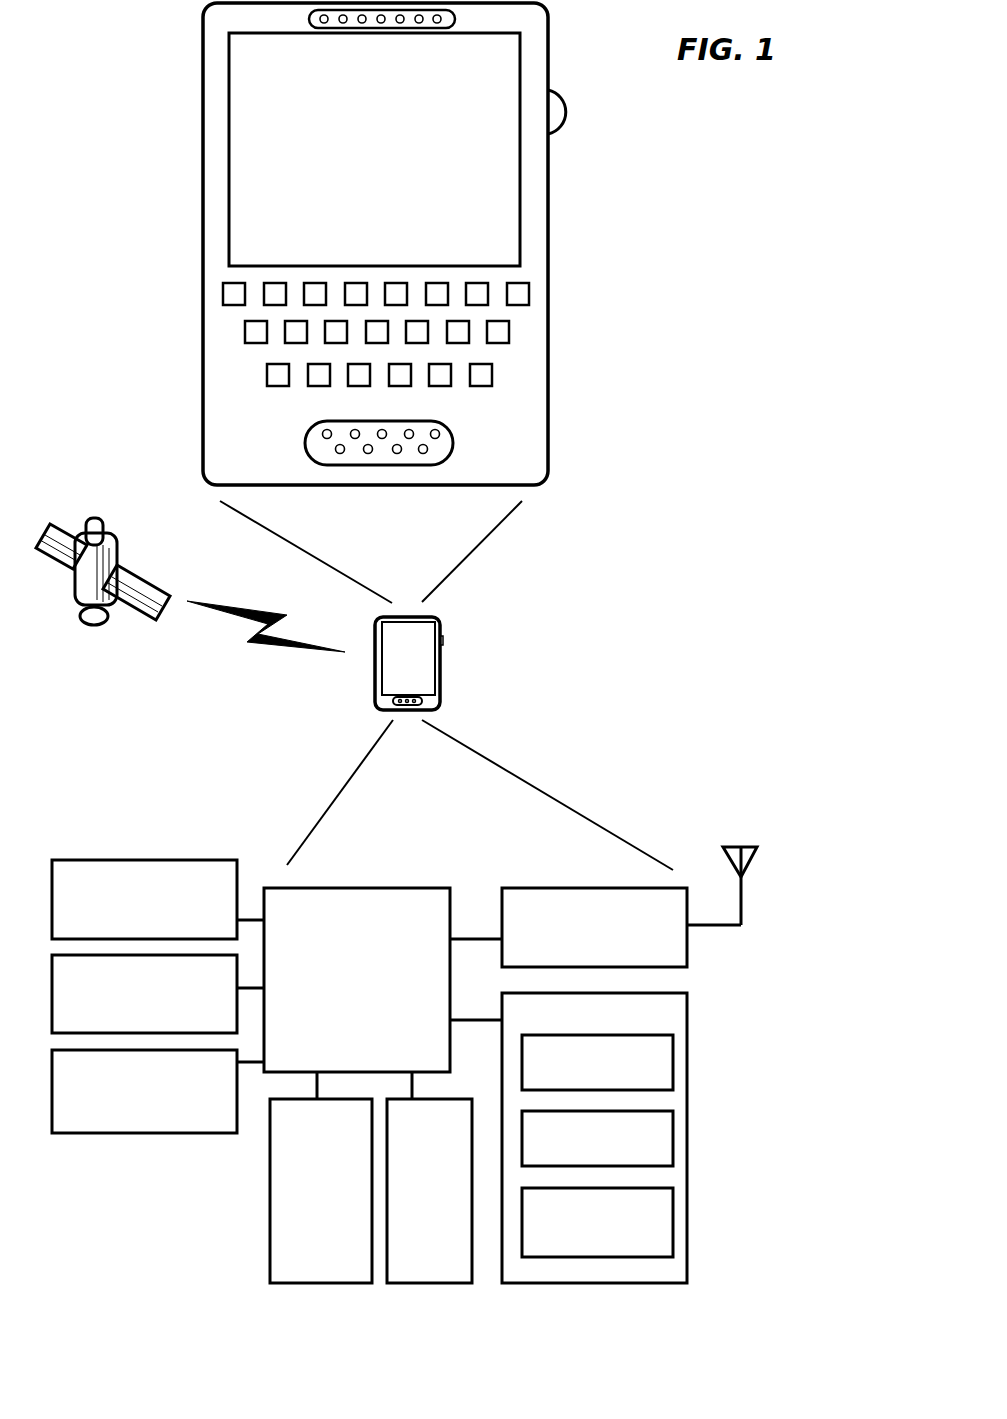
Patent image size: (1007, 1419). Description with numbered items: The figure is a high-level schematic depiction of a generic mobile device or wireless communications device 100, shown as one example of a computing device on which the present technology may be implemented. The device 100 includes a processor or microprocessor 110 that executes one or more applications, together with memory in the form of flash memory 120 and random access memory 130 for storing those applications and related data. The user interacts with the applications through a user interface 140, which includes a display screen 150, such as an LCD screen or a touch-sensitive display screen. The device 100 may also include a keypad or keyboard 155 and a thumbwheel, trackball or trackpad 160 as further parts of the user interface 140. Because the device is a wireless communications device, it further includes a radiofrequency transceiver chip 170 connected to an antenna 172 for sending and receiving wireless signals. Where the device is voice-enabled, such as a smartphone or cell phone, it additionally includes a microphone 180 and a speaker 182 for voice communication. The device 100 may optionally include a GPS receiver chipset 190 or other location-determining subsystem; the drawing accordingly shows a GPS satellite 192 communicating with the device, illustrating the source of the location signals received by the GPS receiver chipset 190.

The wireless communications device 100 is at (548, 248).
The microprocessor 110 is at (339, 998).
The flash memory 120 is at (304, 1226).
The random access memory 130 is at (413, 1213).
The user interface 140 is at (687, 1020).
The display screen 150 is at (488, 183).
The keypad or keyboard 155 is at (520, 335).
The thumbwheel, trackball or trackpad 160 is at (563, 117).
The radiofrequency transceiver chip 170 is at (577, 961).
The antenna 172 is at (743, 902).
The microphone 180 is at (128, 921).
The speaker 182 is at (128, 1016).
The GPS receiver chipset 190 is at (128, 1113).
The GPS satellite 192 is at (95, 622).